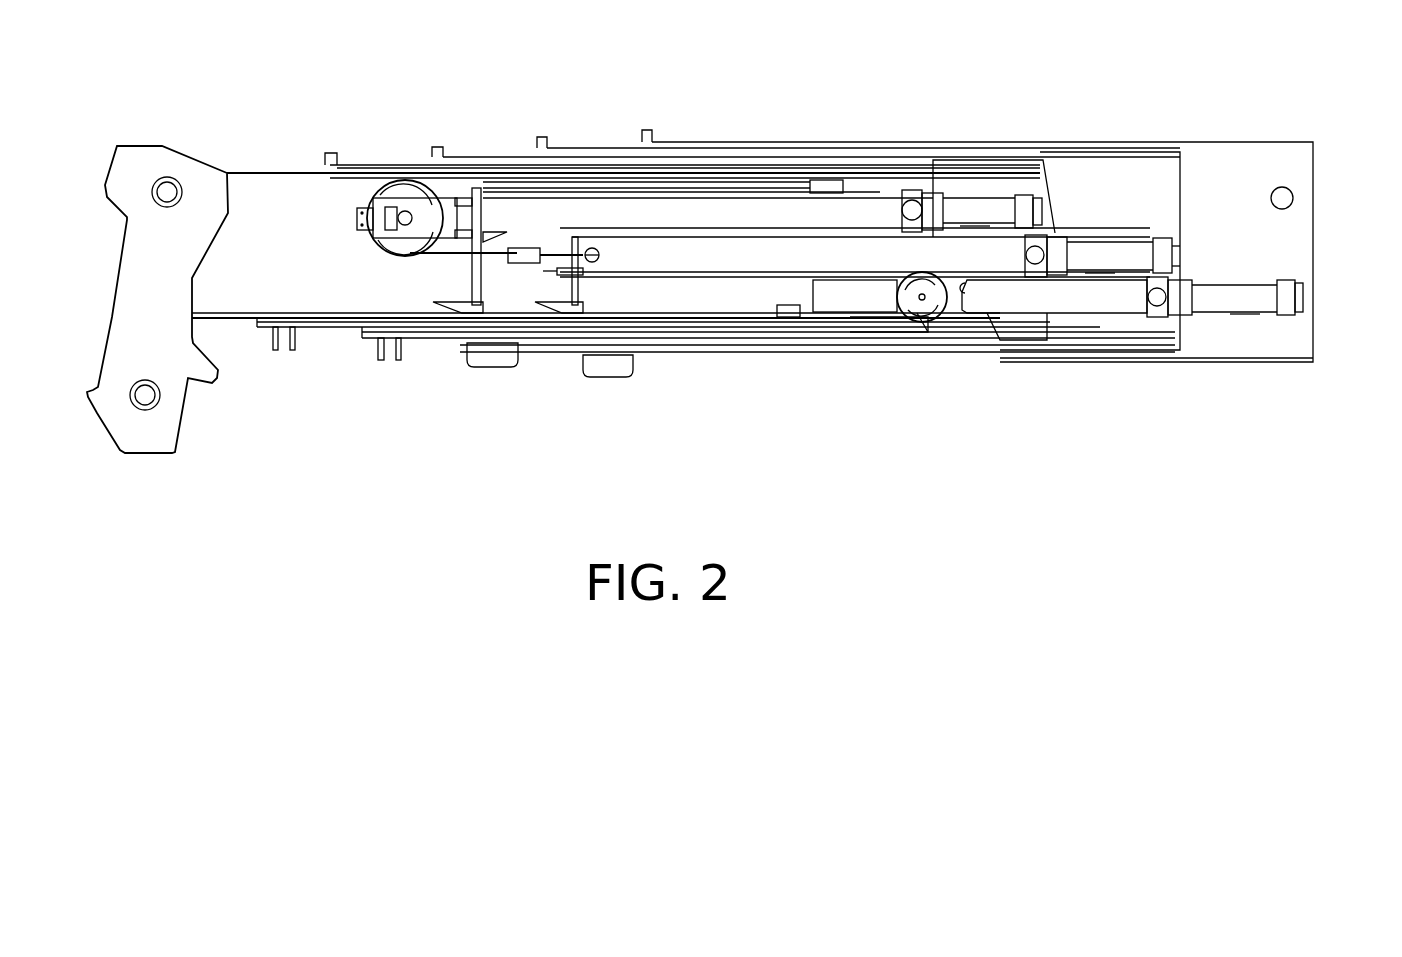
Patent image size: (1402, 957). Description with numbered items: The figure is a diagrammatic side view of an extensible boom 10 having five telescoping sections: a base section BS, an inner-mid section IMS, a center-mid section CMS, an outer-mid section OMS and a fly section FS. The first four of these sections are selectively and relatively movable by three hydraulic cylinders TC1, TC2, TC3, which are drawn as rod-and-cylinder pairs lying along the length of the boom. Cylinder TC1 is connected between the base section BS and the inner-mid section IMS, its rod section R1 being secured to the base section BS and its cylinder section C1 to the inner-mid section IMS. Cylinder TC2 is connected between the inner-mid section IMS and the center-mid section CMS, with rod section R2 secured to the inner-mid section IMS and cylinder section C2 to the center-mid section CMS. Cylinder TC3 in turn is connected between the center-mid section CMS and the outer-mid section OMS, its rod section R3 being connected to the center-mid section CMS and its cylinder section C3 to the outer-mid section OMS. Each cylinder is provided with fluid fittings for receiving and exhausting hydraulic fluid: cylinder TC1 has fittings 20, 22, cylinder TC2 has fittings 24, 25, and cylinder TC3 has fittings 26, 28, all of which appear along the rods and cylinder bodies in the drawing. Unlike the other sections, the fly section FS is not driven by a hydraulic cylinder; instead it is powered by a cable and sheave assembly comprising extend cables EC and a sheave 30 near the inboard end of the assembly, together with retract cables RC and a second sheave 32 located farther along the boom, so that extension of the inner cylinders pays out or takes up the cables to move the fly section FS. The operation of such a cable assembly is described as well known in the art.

The extensible boom 10 is at (258, 130).
The sheave 30 is at (380, 187).
The extend cables EC is at (463, 178).
The cylinder section C3 is at (557, 200).
The fly section FS is at (672, 177).
The outer-mid section OMS is at (788, 165).
The fluid fitting 28 is at (922, 192).
The rod section R3 is at (965, 194).
The center-mid section CMS is at (1033, 157).
The inner-mid section IMS is at (1165, 150).
The base section BS is at (1285, 145).
The fluid fitting 26 is at (1050, 192).
The fluid fitting 25 is at (1050, 235).
The rod section R2 is at (1140, 240).
The fluid fitting 24 is at (1180, 248).
The fluid fitting 22 is at (1160, 300).
The rod section R1 is at (1263, 282).
The fluid fitting 20 is at (1307, 287).
The cylinder section C2 is at (722, 262).
The retract cables RC is at (857, 313).
The sheave 32 is at (927, 320).
The hydraulic cylinder TC3 is at (973, 230).
The hydraulic cylinder TC2 is at (1097, 277).
The hydraulic cylinder TC1 is at (1243, 317).
The cylinder section C1 is at (1068, 302).